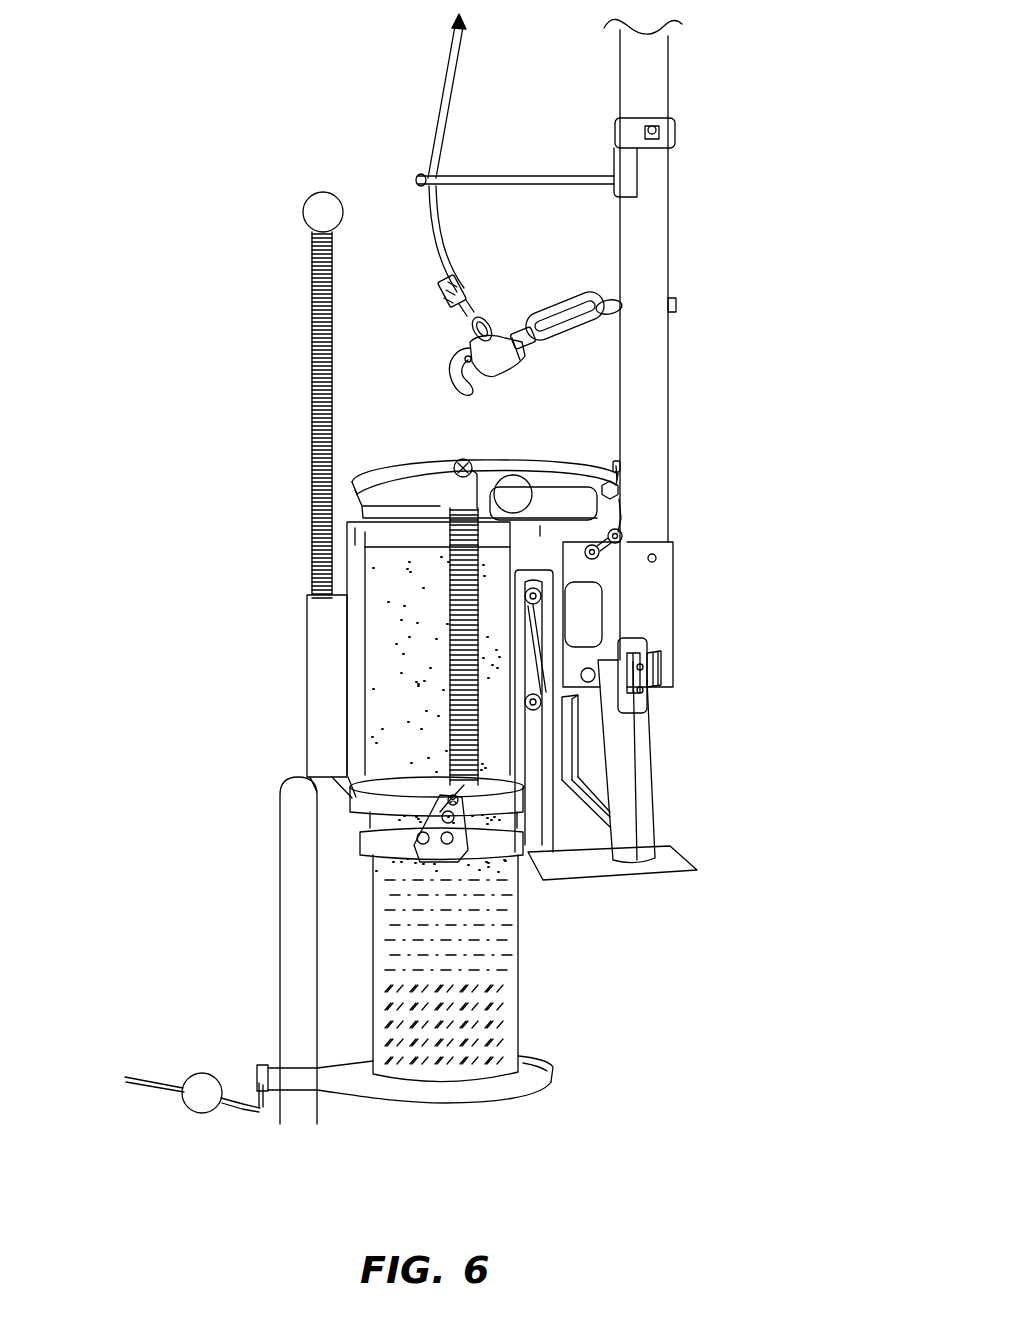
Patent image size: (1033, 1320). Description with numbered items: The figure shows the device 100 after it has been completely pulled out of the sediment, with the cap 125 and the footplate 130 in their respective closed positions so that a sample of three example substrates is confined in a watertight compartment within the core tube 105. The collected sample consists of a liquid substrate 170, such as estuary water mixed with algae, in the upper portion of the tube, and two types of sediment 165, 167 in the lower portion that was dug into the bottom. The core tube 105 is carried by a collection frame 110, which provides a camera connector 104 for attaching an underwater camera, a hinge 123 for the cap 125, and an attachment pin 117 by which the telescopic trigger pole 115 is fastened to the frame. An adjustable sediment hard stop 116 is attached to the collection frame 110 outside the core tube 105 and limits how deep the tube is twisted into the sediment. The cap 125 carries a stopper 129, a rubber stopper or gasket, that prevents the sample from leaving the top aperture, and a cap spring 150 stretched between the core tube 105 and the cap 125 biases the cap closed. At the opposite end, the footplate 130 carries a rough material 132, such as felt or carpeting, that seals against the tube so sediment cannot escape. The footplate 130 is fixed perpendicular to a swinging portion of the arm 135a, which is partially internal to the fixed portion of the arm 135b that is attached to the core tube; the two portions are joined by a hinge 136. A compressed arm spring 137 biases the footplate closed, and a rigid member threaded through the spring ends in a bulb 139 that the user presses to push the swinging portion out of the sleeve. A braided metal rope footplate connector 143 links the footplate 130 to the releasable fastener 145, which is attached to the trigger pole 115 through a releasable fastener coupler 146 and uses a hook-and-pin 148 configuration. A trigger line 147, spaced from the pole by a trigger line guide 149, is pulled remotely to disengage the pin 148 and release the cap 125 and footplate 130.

The device 100 is at (200, 108).
The camera connector 104 is at (645, 704).
The core tube 105 is at (518, 926).
The collection frame 110 is at (538, 628).
The trigger pole 115 is at (656, 222).
The sediment hard stop 116 is at (702, 846).
The attachment pin 117 is at (661, 560).
The hinge 123 is at (600, 470).
The cap 125 is at (410, 448).
The stopper 129 is at (392, 493).
The footplate 130 is at (403, 1096).
The rough material 132 is at (540, 1060).
The swinging portion of the arm 135a is at (300, 873).
The fixed portion of the arm 135b is at (307, 660).
The hinge 136 is at (328, 737).
The arm spring 137 is at (296, 320).
The bulb 139 is at (322, 210).
The footplate connector 143 is at (182, 1084).
The releasable fastener 145 is at (518, 324).
The releasable fastener coupler 146 is at (590, 286).
The trigger line 147 is at (434, 108).
The pin 148 is at (522, 358).
The trigger line guide 149 is at (526, 158).
The cap spring 150 is at (412, 588).
The sediment 165 is at (460, 936).
The sediment 167 is at (465, 1036).
The liquid substrate 170 is at (432, 668).